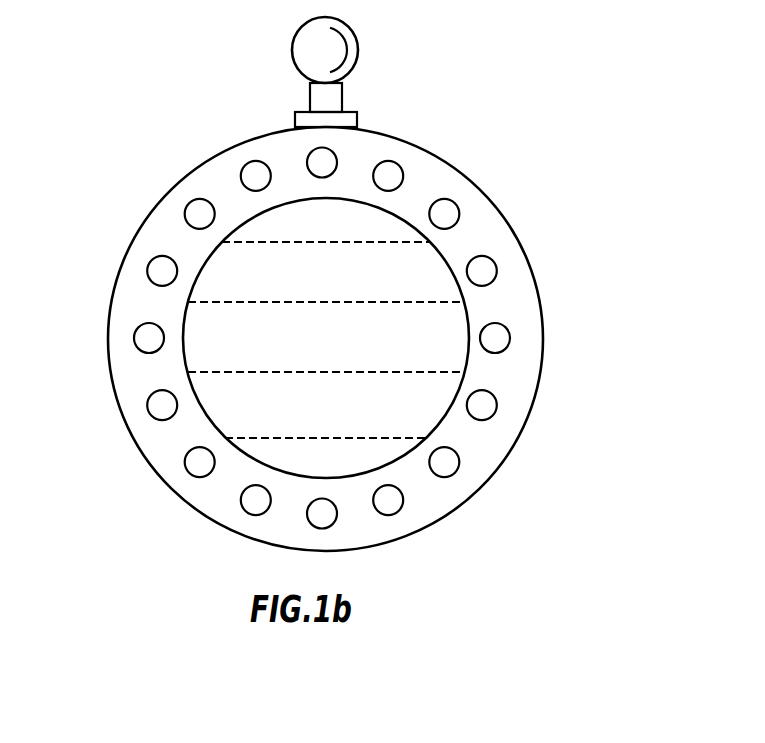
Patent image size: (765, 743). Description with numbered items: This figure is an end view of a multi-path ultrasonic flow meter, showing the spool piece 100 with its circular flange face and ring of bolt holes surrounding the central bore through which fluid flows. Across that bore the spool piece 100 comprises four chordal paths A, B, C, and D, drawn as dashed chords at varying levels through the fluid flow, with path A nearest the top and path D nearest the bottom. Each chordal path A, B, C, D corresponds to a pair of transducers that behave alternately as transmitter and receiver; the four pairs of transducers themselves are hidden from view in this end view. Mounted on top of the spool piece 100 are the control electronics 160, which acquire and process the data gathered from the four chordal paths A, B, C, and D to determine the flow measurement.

The spool piece 100 is at (362, 339).
The control electronics 160 is at (360, 53).
The chordal path A is at (326, 225).
The chordal path B is at (326, 289).
The chordal path C is at (326, 387).
The chordal path D is at (326, 454).